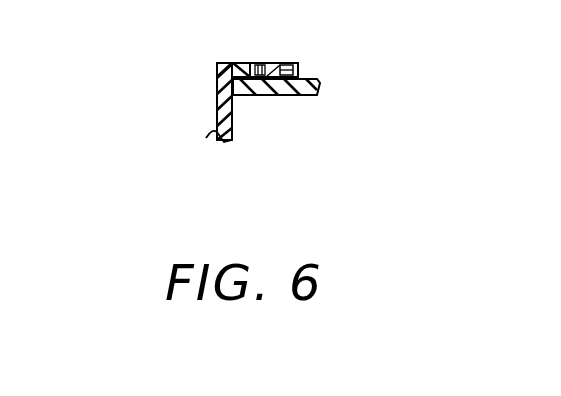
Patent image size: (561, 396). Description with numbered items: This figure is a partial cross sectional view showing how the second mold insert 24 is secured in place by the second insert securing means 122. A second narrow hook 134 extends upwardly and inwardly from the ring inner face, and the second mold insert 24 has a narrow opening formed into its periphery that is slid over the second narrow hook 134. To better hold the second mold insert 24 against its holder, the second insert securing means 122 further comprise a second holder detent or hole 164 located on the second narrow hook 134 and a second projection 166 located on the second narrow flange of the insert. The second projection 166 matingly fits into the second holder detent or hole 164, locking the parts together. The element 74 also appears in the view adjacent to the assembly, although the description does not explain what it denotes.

The second insert securing means 122 is at (160, 86).
The panel edge 74 is at (217, 122).
The second holder detent or hole 164 is at (253, 63).
The second projection 166 is at (265, 63).
The second narrow hook 134 is at (293, 70).
The second mold insert 24 is at (318, 88).